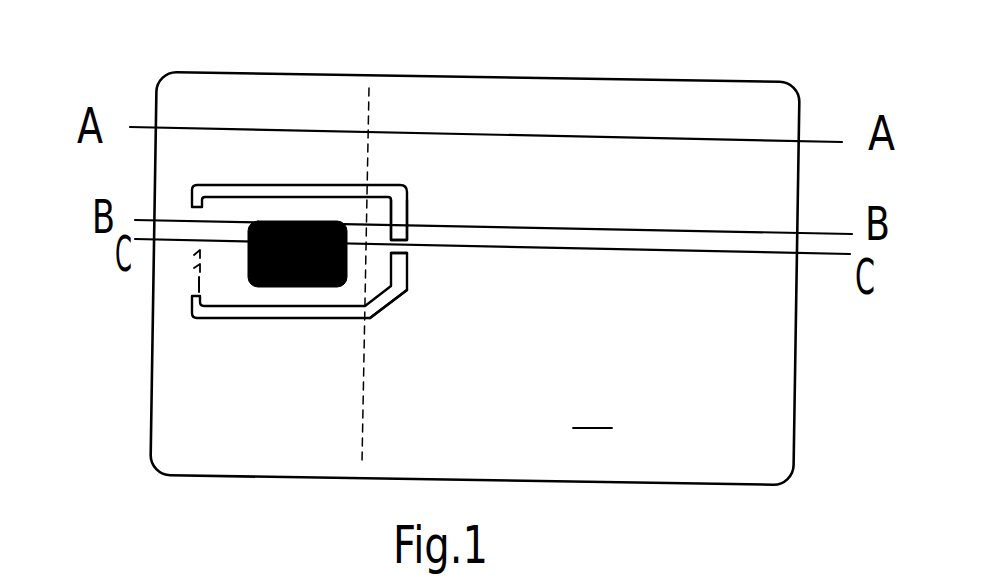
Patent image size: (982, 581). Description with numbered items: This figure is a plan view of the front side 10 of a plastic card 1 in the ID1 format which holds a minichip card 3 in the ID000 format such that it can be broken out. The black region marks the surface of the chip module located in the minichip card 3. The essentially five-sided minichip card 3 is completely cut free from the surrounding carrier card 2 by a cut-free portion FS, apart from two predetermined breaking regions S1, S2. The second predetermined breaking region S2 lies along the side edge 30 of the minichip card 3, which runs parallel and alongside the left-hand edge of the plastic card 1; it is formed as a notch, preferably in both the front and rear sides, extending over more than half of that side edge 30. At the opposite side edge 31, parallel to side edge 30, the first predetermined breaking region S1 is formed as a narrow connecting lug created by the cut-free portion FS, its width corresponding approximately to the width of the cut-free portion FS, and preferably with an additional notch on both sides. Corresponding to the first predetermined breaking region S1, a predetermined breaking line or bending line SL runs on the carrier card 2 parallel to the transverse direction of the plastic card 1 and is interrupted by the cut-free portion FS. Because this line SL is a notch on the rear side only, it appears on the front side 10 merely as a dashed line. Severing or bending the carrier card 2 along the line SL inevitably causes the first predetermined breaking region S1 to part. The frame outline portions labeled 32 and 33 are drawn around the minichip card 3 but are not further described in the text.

The plastic card 1 is at (501, 242).
The carrier card 2 is at (765, 400).
The minichip card 3 is at (230, 288).
The front side 10 is at (592, 411).
The side edge 30 is at (199, 250).
The side edge 31 is at (407, 215).
The upper frame portion 32 is at (287, 183).
The lower frame portion 33 is at (307, 320).
The predetermined breaking line/predetermined bending line SL is at (370, 110).
The cut-free portion FS is at (387, 297).
The first predetermined breaking region S1 is at (406, 252).
The second predetermined breaking region S2 is at (199, 265).